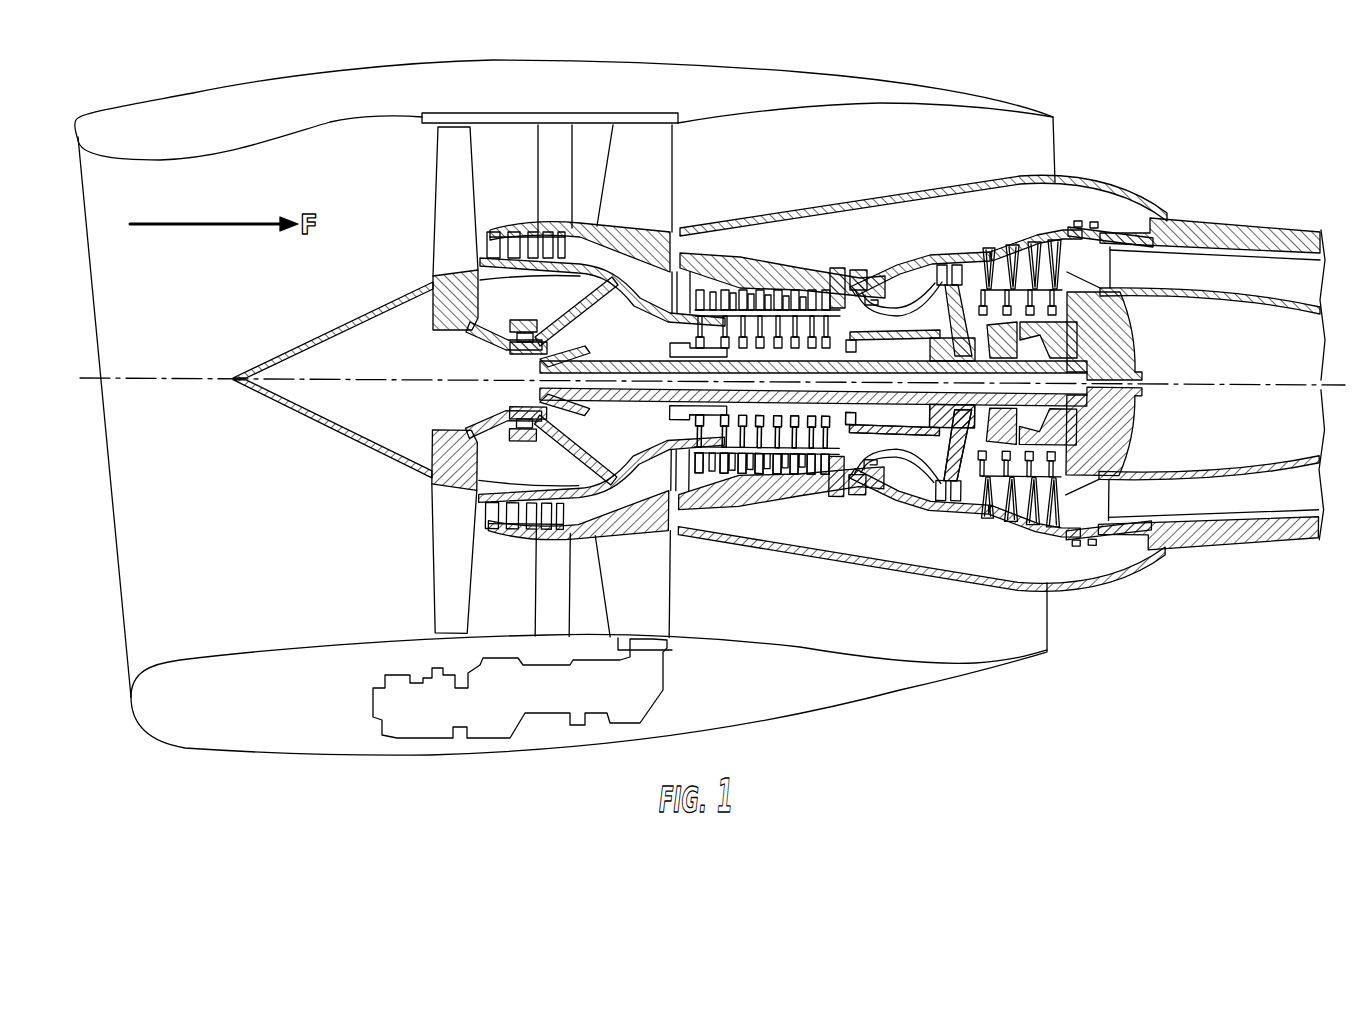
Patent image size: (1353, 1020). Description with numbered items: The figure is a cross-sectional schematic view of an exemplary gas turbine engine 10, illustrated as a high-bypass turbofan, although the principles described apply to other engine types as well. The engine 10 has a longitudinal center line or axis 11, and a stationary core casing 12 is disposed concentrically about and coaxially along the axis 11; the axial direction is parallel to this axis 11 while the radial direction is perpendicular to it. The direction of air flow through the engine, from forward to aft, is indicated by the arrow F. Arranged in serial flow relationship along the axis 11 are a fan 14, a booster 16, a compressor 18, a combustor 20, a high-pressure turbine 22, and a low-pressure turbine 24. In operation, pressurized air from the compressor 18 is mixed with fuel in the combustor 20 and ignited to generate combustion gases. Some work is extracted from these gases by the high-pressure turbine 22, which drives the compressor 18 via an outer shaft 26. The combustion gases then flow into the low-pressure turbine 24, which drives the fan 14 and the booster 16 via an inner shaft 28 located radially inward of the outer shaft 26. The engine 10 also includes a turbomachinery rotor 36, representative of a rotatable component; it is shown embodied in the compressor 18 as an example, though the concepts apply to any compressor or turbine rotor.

The gas turbine engine 10 is at (1082, 146).
The longitudinal center line or axis 11 is at (150, 372).
The core casing 12 is at (690, 228).
The fan 14 is at (380, 487).
The booster 16 is at (515, 524).
The compressor 18 is at (735, 292).
The combustor 20 is at (905, 290).
The high-pressure turbine 22 is at (992, 272).
The low-pressure turbine 24 is at (1048, 245).
The outer shaft 26 is at (893, 440).
The inner shaft 28 is at (597, 359).
The turbomachinery rotor 36 is at (676, 424).